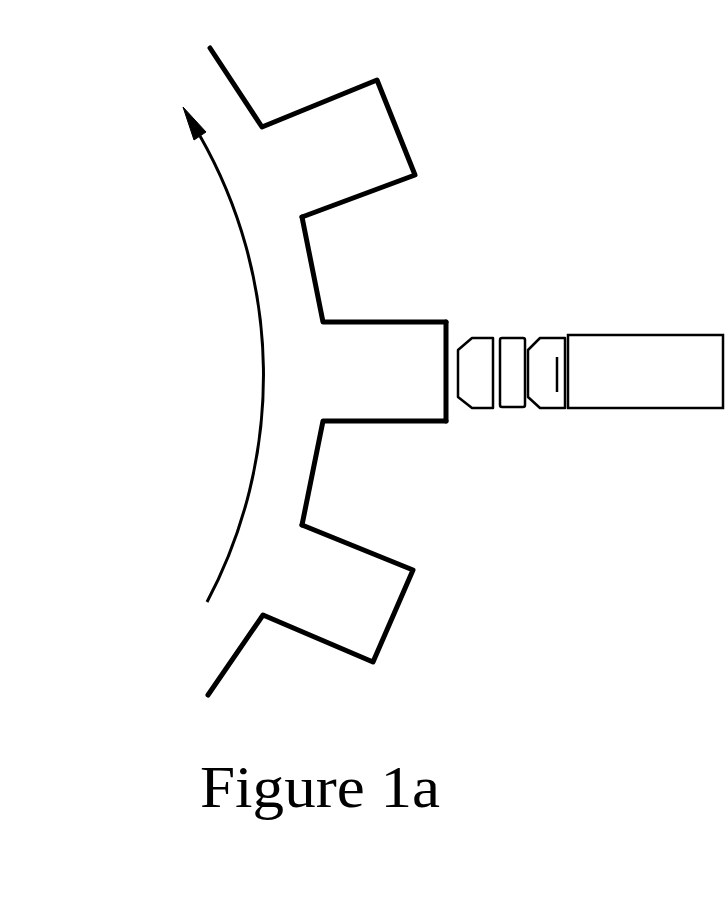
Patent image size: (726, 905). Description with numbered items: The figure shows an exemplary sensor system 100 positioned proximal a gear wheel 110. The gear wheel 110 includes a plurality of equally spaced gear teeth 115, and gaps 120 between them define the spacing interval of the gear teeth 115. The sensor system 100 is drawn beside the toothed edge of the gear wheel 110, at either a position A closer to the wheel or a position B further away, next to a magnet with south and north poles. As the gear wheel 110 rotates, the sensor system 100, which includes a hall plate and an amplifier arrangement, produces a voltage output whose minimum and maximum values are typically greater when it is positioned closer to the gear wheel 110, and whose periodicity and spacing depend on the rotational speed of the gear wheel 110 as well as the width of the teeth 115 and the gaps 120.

The sensor system 100 is at (559, 427).
The gear wheel 110 is at (368, 368).
The gear teeth 115 is at (370, 152).
The gaps 120 is at (395, 267).